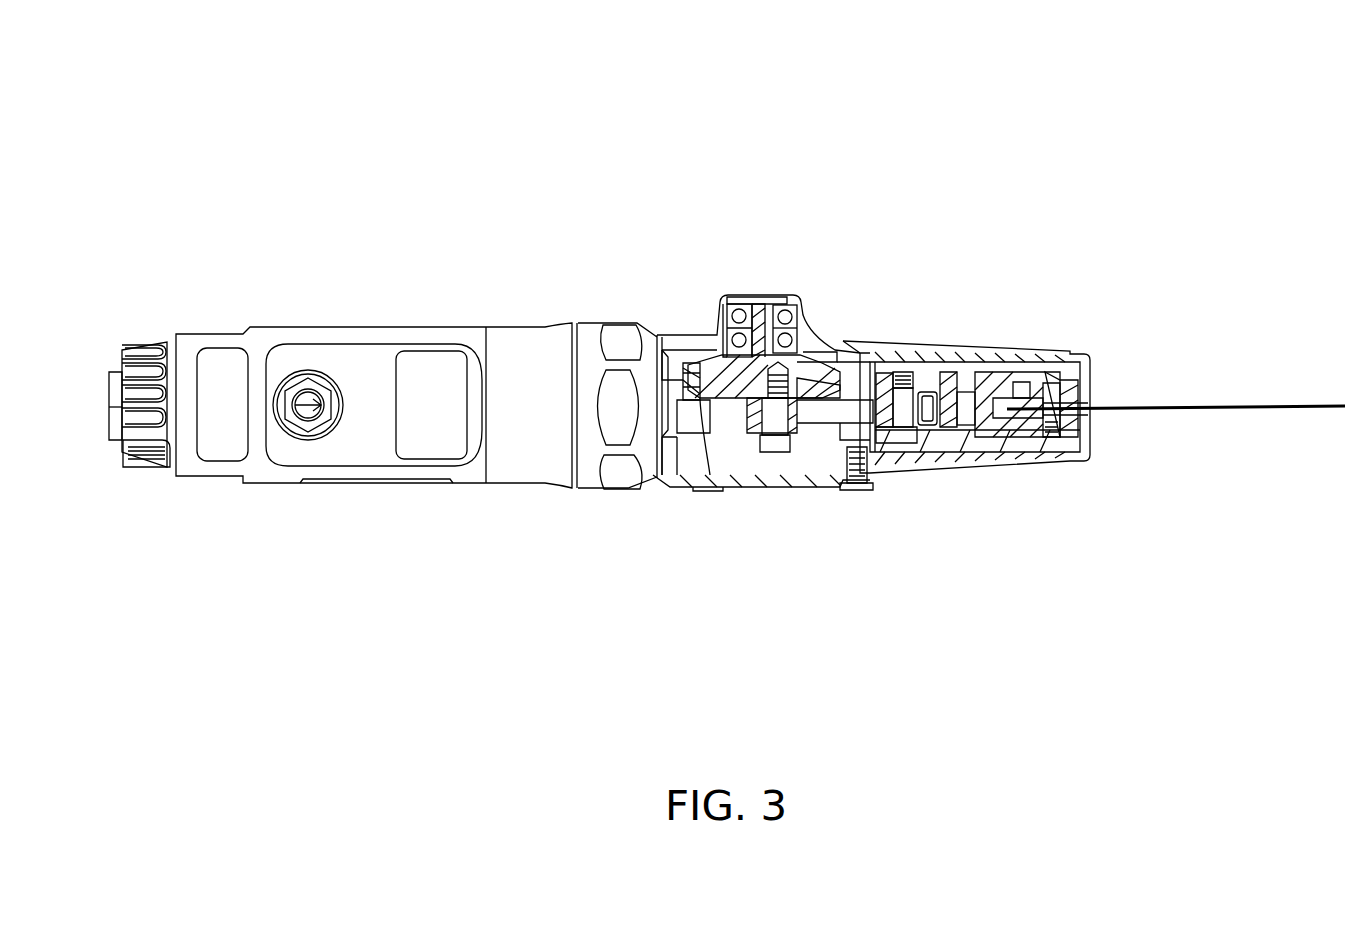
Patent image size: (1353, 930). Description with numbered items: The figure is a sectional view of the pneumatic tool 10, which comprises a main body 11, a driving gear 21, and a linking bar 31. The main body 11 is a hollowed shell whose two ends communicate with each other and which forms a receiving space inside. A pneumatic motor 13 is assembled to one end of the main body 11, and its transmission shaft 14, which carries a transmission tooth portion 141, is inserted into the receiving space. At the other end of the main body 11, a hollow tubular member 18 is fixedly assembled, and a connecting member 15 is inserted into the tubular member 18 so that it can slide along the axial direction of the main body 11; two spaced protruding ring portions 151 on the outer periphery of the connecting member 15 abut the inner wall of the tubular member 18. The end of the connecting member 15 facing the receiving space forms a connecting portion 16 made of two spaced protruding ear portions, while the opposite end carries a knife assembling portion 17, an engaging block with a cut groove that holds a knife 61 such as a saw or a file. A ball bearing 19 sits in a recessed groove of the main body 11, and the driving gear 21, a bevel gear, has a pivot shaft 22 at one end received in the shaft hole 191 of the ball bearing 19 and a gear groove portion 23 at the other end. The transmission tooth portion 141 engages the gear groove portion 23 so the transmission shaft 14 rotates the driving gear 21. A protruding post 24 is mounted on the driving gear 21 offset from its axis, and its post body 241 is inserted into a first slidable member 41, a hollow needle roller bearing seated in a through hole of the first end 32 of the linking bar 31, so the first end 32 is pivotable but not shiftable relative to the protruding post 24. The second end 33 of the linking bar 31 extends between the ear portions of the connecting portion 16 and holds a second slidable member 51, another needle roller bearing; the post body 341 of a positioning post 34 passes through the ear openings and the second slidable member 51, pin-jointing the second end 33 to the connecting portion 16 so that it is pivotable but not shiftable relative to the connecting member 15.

The pneumatic tool 10 is at (508, 149).
The main body 11 is at (740, 343).
The pneumatic motor 13 is at (378, 472).
The transmission shaft 14 is at (666, 480).
The transmission tooth portion 141 is at (683, 478).
The connecting member 15 is at (976, 348).
The protruding ring portions 151 is at (940, 470).
The connecting portion 16 is at (893, 348).
The knife assembling portion 17 is at (1035, 462).
The tubular member 18 is at (997, 462).
The ball bearing 19 is at (707, 345).
The shaft hole 191 is at (690, 345).
The driving gear 21 is at (717, 400).
The pivot shaft 22 is at (762, 327).
The gear groove portion 23 is at (700, 480).
The protruding post 24 is at (783, 450).
The post body 241 is at (806, 450).
The linking bar 31 is at (840, 350).
The first end 32 is at (725, 425).
The second end 33 is at (934, 348).
The positioning post 34 is at (900, 464).
The post body 341 is at (848, 340).
The first slidable member 41 is at (769, 440).
The second slidable member 51 is at (875, 470).
The knife 61 is at (1192, 415).